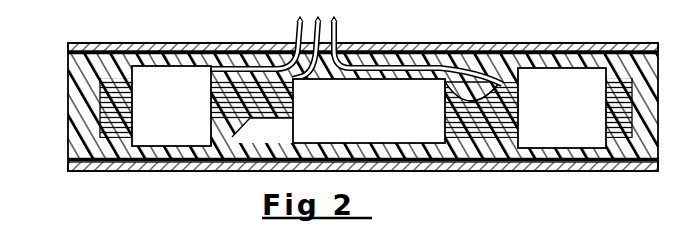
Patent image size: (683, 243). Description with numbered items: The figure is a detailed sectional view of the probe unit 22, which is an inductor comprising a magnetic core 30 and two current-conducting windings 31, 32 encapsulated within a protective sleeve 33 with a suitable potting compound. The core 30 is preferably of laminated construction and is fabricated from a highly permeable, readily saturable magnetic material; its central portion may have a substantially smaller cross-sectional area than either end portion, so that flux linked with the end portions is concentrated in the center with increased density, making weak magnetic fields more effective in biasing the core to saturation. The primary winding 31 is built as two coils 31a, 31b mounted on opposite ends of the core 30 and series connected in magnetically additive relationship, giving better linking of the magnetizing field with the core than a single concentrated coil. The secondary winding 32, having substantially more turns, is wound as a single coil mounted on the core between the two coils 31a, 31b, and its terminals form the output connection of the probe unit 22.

The probe unit 22 is at (238, 174).
The magnetic core 30 is at (100, 100).
The primary winding 31 is at (158, 52).
The first primary coil 31a is at (176, 119).
The second primary coil 31b is at (574, 110).
The secondary winding 32 is at (392, 120).
The protective sleeve 33 is at (147, 173).